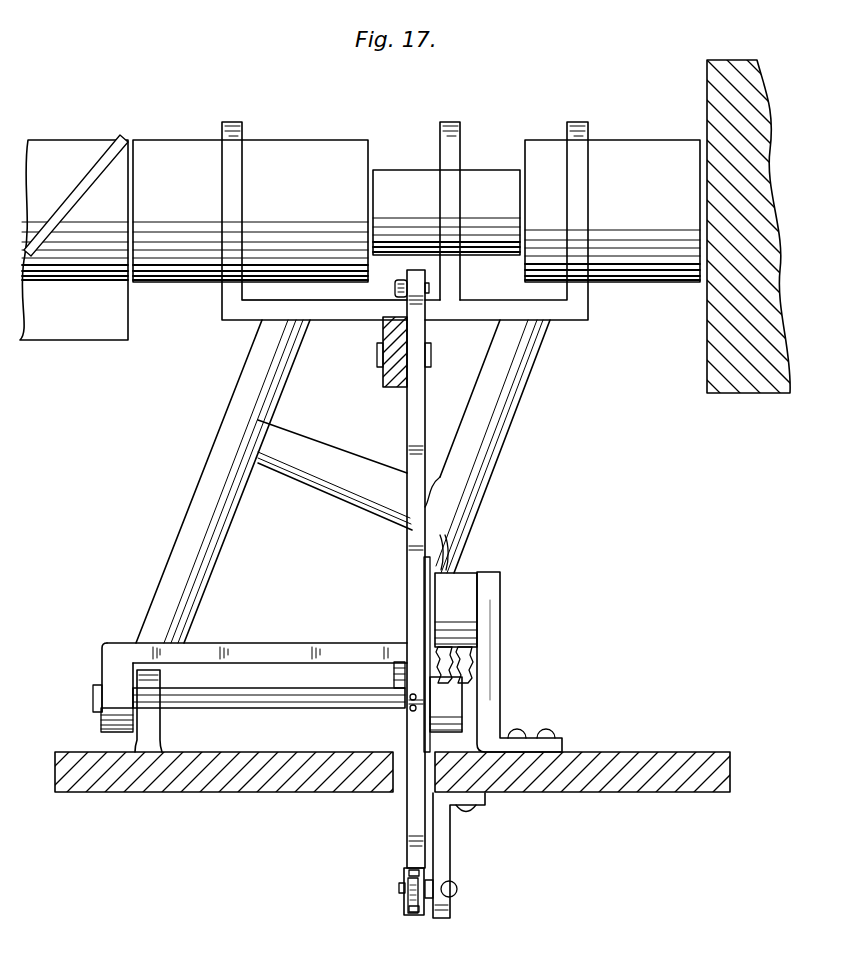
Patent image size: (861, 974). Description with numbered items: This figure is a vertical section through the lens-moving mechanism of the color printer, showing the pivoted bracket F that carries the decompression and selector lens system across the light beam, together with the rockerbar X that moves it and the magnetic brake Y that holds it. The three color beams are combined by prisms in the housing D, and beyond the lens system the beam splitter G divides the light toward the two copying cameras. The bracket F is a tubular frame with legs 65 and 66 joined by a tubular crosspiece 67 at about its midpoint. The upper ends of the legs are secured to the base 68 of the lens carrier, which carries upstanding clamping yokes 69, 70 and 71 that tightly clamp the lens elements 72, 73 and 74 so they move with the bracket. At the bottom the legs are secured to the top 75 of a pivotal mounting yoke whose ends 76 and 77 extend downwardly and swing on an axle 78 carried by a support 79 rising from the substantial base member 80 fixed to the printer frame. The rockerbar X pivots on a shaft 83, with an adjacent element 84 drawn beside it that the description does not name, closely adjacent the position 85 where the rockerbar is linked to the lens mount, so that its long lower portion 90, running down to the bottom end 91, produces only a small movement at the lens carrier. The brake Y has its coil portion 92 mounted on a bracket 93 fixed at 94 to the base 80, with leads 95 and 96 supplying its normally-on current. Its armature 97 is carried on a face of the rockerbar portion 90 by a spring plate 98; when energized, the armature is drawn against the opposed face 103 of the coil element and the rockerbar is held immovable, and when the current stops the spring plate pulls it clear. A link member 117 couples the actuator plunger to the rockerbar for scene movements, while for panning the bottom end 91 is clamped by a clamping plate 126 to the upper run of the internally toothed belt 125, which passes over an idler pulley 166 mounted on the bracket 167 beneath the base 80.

The beam splitter G is at (93, 165).
The housing D is at (748, 398).
The pivoted bracket F is at (208, 440).
The rockerbar X is at (400, 546).
The magnetic brake Y is at (470, 556).
The leg 65 is at (180, 527).
The leg 66 is at (470, 522).
The tubular crosspiece 67 is at (334, 446).
The base of the lens carrier 68 is at (356, 314).
The clamping yoke 69 is at (244, 128).
The clamping yoke 70 is at (460, 155).
The clamping yoke 71 is at (590, 126).
The lens element 72 is at (184, 143).
The lens element 73 is at (412, 174).
The lens element 74 is at (640, 150).
The top of pivotal mounting yoke 75 is at (282, 648).
The end of mounting yoke 76 is at (110, 670).
The end of mounting yoke 77 is at (457, 717).
The axle 78 is at (282, 695).
The support 79 is at (160, 736).
The base member 80 is at (162, 790).
The shaft 83 is at (378, 356).
The clamp nuts 84 is at (394, 388).
The position 85 is at (396, 289).
The lower portion of the rockerbar 90 is at (410, 532).
The bottom end of the rockerbar 91 is at (404, 870).
The coil portion 92 is at (458, 613).
The bracket 93 is at (490, 680).
The securing point 94 is at (560, 736).
The lead 95 is at (446, 704).
The lead 96 is at (470, 660).
The armature 97 is at (442, 570).
The spring plate 98 is at (424, 573).
The face of the coil element 103 is at (458, 610).
The link member 117 is at (393, 682).
The belt 125 is at (413, 868).
The clamping plate 126 is at (399, 878).
The idler pulley 166 is at (408, 900).
The bracket 167 is at (443, 858).